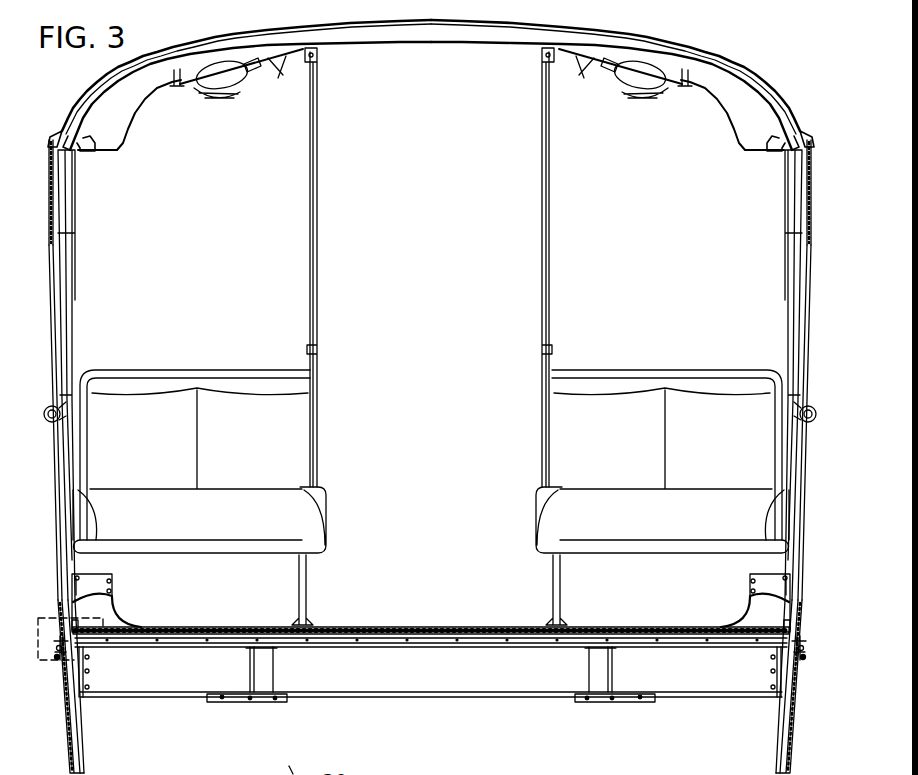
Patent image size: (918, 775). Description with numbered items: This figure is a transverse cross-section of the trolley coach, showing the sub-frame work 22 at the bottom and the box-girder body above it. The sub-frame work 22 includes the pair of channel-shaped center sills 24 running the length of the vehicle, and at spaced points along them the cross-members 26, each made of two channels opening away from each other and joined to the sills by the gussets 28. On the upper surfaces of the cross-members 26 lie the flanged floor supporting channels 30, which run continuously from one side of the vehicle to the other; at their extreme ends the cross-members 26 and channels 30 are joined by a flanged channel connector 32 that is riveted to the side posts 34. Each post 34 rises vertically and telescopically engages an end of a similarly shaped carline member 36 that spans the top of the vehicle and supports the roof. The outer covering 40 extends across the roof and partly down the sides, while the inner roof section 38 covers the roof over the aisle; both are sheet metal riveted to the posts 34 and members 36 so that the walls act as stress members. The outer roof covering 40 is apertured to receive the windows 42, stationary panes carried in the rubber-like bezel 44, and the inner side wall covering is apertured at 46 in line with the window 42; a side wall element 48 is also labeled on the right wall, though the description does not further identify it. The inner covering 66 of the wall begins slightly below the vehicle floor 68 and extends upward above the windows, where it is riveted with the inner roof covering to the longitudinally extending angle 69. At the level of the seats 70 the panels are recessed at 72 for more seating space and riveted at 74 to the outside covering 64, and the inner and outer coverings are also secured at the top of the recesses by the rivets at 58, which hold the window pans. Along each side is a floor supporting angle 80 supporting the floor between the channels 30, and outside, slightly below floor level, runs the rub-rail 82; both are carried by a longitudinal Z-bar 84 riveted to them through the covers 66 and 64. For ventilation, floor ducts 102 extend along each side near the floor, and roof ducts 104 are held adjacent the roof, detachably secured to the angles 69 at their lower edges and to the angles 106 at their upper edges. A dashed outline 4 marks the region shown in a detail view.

The detail view region 4 is at (94, 660).
The sub-frame work 22 is at (431, 691).
The center sills 24 is at (247, 690).
The cross-members 26 is at (157, 689).
The gussets 28 is at (285, 700).
The floor supporting channels 30 is at (432, 636).
The flanged channel connector 32 is at (85, 684).
The side posts 34 is at (72, 740).
The carline member 36 is at (729, 69).
The inner roof section 38 is at (404, 46).
The outer roof covering 40 is at (762, 67).
The windows 42 is at (52, 182).
The bezel 44 is at (52, 138).
The inner side wall covering aperture 46 is at (73, 217).
The side wall panel 48 is at (797, 290).
The rivets 58 is at (60, 415).
The outside covering 64 is at (58, 562).
The inner covering of the vehicle wall 66 is at (113, 600).
The vehicle floor 68 is at (465, 625).
The longitudinally extending angle 69 is at (84, 150).
The seats 70 is at (321, 527).
The recess 72 is at (66, 467).
The rivets 74 is at (68, 518).
The floor supporting angle 80 is at (78, 630).
The rub-rail 82 is at (57, 660).
The Z-bar 84 is at (61, 642).
The floor ducts 102 is at (112, 575).
The roof ducts 104 is at (127, 118).
The angles 106 is at (240, 71).